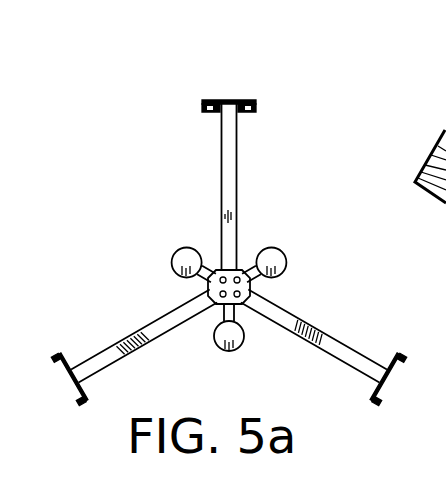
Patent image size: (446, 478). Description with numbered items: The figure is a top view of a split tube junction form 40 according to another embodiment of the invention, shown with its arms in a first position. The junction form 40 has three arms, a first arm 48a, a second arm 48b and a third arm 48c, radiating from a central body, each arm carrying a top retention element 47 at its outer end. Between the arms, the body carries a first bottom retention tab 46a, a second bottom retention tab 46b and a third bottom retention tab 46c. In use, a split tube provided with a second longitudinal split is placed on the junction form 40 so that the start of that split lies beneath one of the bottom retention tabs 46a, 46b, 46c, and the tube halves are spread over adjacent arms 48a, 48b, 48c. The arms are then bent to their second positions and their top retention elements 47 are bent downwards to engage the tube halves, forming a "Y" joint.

The junction form 40 is at (257, 202).
The top retention element 47 is at (205, 98).
The first arm 48a is at (140, 333).
The second arm 48b is at (333, 342).
The third arm 48c is at (221, 145).
The first bottom retention tab 46a is at (220, 333).
The second bottom retention tab 46b is at (186, 250).
The third bottom retention tab 46c is at (275, 252).